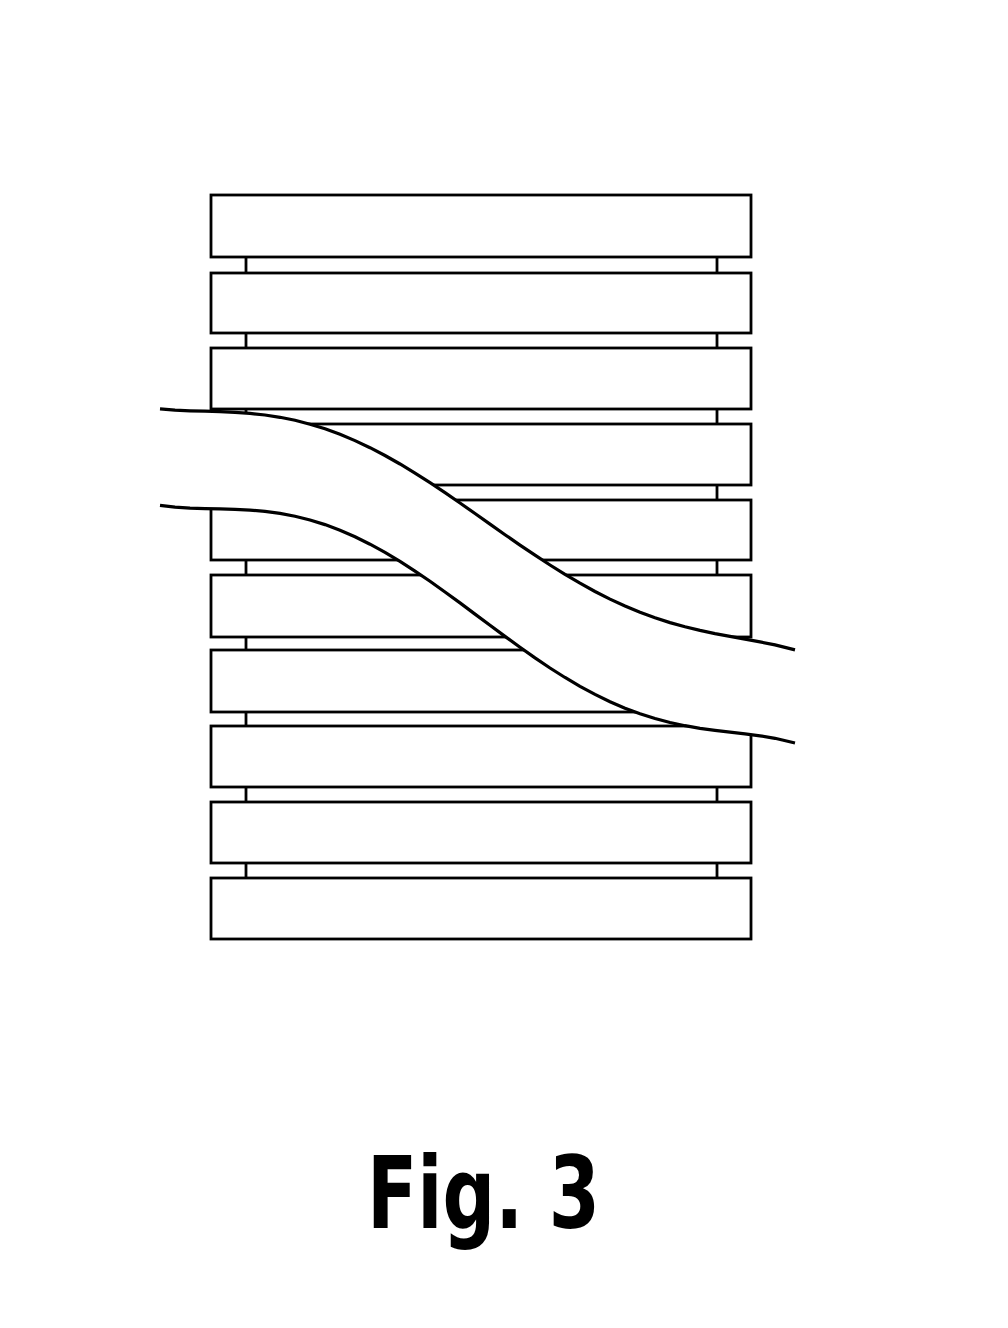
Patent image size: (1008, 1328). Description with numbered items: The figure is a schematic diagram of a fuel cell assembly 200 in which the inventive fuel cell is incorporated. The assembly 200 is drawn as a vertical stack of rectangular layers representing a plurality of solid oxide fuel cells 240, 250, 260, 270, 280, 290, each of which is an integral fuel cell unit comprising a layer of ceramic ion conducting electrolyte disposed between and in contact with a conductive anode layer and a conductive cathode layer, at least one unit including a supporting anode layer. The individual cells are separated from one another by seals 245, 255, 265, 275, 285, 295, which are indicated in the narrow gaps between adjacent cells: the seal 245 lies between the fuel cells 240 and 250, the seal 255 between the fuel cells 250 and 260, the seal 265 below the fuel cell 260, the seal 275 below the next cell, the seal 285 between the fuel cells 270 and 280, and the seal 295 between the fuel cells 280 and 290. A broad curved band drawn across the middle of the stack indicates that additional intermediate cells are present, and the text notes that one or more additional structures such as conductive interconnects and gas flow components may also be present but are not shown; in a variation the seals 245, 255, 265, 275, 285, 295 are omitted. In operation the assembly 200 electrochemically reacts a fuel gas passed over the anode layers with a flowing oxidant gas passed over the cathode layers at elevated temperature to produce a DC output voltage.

The fuel cell assembly 200 is at (476, 469).
The solid oxide fuel cell 240 is at (192, 214).
The seal 245 is at (745, 268).
The solid oxide fuel cell 250 is at (192, 289).
The seal 255 is at (745, 343).
The solid oxide fuel cell 260 is at (192, 364).
The seal 265 is at (745, 417).
The seal 275 is at (750, 492).
The solid oxide fuel cell 270 is at (192, 750).
The seal 285 is at (750, 794).
The solid oxide fuel cell 280 is at (192, 822).
The seal 295 is at (750, 868).
The solid oxide fuel cell 290 is at (192, 895).